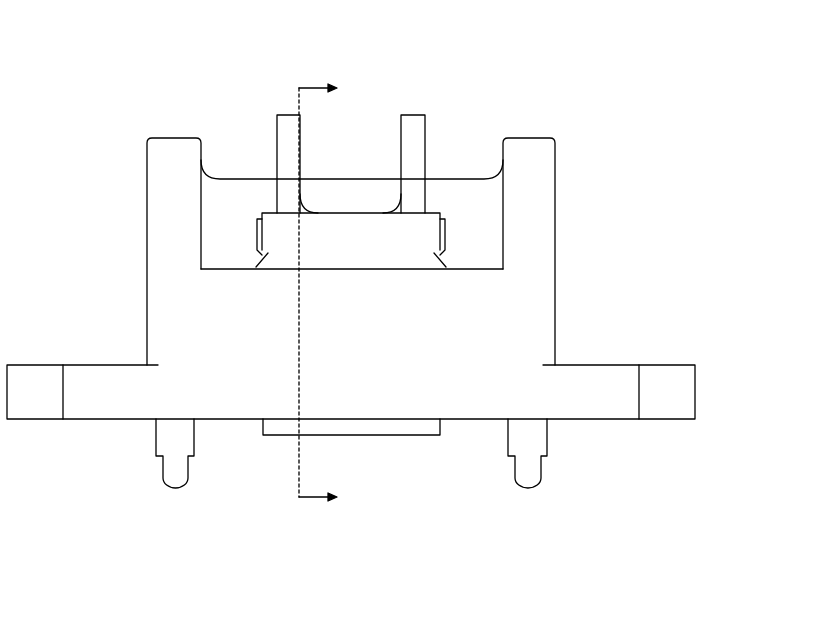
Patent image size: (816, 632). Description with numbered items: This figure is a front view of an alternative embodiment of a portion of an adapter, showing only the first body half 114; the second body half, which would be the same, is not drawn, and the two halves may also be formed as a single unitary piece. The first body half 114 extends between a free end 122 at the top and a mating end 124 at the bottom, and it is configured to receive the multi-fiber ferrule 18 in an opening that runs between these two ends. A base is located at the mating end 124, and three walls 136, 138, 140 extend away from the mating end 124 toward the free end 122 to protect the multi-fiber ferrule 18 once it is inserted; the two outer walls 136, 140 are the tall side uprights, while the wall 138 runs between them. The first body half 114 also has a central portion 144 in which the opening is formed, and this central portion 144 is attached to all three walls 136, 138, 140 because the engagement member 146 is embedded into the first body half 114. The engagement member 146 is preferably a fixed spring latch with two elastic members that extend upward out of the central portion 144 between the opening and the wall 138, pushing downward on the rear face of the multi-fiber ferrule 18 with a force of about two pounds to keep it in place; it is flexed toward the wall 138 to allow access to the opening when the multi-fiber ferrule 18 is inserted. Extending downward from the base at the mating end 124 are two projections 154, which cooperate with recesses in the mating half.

The first body half 114 is at (660, 188).
The free end 122 is at (590, 130).
The wall 136 is at (147, 162).
The wall 140 is at (525, 138).
The wall 138 is at (245, 179).
The central portion 144 is at (227, 269).
The mating end 124 is at (675, 419).
The projections 154 is at (162, 466).
The engagement member 146 is at (409, 115).
The multi-fiber ferrule 18 is at (432, 212).